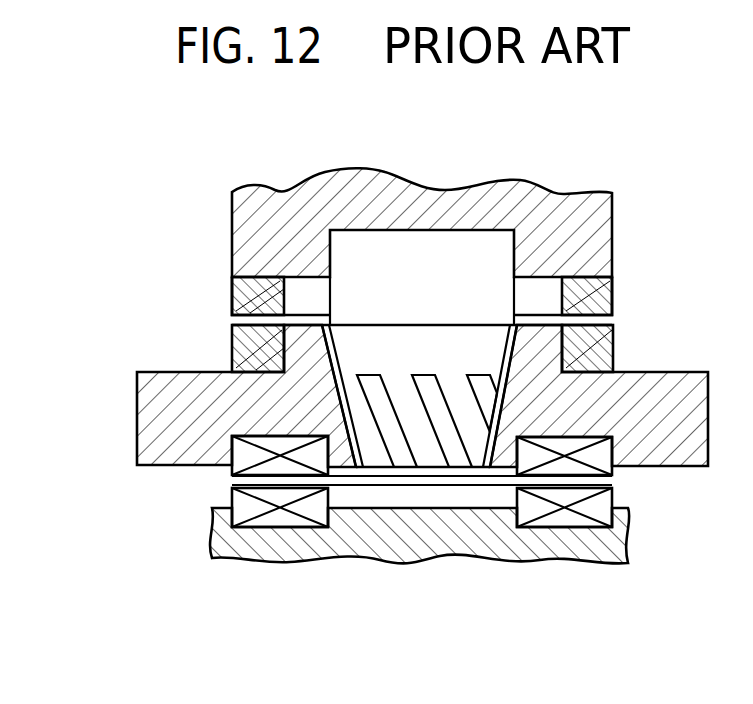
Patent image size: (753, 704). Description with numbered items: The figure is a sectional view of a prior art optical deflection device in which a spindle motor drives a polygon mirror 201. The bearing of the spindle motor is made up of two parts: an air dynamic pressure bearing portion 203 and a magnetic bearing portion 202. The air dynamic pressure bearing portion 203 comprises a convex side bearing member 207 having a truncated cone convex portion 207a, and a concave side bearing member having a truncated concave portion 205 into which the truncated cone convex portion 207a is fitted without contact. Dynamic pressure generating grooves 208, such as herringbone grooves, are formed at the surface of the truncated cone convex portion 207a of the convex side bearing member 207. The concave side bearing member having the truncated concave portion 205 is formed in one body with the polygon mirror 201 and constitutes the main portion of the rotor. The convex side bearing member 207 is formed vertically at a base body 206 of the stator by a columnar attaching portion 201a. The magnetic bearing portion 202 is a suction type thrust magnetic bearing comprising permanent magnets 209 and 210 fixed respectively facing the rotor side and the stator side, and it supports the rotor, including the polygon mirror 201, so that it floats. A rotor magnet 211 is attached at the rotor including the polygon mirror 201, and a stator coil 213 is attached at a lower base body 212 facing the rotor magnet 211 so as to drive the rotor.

The polygon mirror 201 is at (158, 412).
The columnar attaching portion 201a is at (290, 334).
The magnetic bearing portion 202 is at (233, 301).
The air dynamic pressure bearing portion 203 is at (450, 423).
The truncated concave portion 205 is at (508, 422).
The base body 206 is at (595, 218).
The convex side bearing member 207 is at (435, 250).
The truncated cone convex portion 207a is at (388, 422).
The dynamic pressure generating grooves 208 is at (422, 423).
The permanent magnet 209 is at (600, 297).
The permanent magnet 210 is at (595, 350).
The rotor magnet 211 is at (243, 456).
The lower base body 212 is at (247, 540).
The stator coil 213 is at (245, 505).